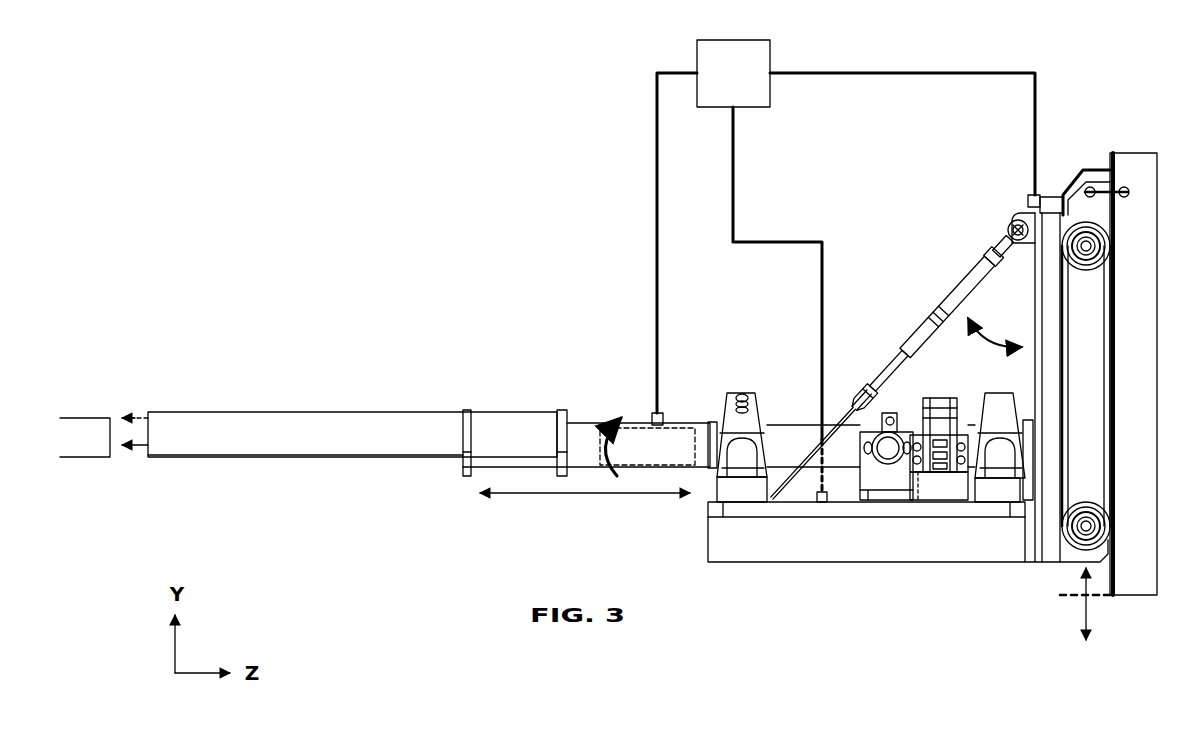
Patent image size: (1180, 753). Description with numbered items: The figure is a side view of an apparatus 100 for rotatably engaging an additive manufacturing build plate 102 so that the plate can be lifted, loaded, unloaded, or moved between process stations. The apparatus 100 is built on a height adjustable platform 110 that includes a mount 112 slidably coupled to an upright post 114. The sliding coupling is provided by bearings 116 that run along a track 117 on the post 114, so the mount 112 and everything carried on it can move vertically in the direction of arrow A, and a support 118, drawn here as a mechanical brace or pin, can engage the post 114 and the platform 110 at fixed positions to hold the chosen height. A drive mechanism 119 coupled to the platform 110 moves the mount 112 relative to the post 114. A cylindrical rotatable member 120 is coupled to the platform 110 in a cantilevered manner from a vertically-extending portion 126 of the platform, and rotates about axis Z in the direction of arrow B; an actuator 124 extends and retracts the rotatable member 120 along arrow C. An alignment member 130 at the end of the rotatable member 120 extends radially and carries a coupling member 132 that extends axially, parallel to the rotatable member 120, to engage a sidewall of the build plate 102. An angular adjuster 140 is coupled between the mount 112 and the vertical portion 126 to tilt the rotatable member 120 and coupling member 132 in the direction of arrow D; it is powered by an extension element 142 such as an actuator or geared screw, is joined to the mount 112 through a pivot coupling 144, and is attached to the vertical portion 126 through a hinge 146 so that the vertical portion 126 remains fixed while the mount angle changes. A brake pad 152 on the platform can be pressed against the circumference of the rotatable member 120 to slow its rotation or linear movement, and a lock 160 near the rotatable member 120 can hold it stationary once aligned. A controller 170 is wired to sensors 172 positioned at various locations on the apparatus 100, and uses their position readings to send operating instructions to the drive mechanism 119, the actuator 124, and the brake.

The apparatus 100 is at (908, 221).
The build plate 102 is at (110, 418).
The height adjustable platform 110 is at (738, 572).
The mount 112 is at (708, 520).
The post 114 is at (1143, 155).
The bearings 116 is at (1090, 272).
The track 117 is at (1116, 153).
The support 118 is at (1105, 188).
The drive mechanism 119 is at (1062, 193).
The rotatable member 120 is at (580, 445).
The actuator 124 is at (643, 426).
The vertically-extending portion 126 is at (1040, 518).
The alignment member 130 is at (468, 410).
The coupling member 132 is at (242, 435).
The angular adjuster 140 is at (800, 455).
The extension element 142 is at (928, 322).
The pivot coupling 144 is at (1030, 450).
The hinge 146 is at (1008, 228).
The brake pad 152 is at (935, 492).
The lock 160 is at (882, 492).
The controller 170 is at (733, 73).
The sensor 172 is at (664, 418).